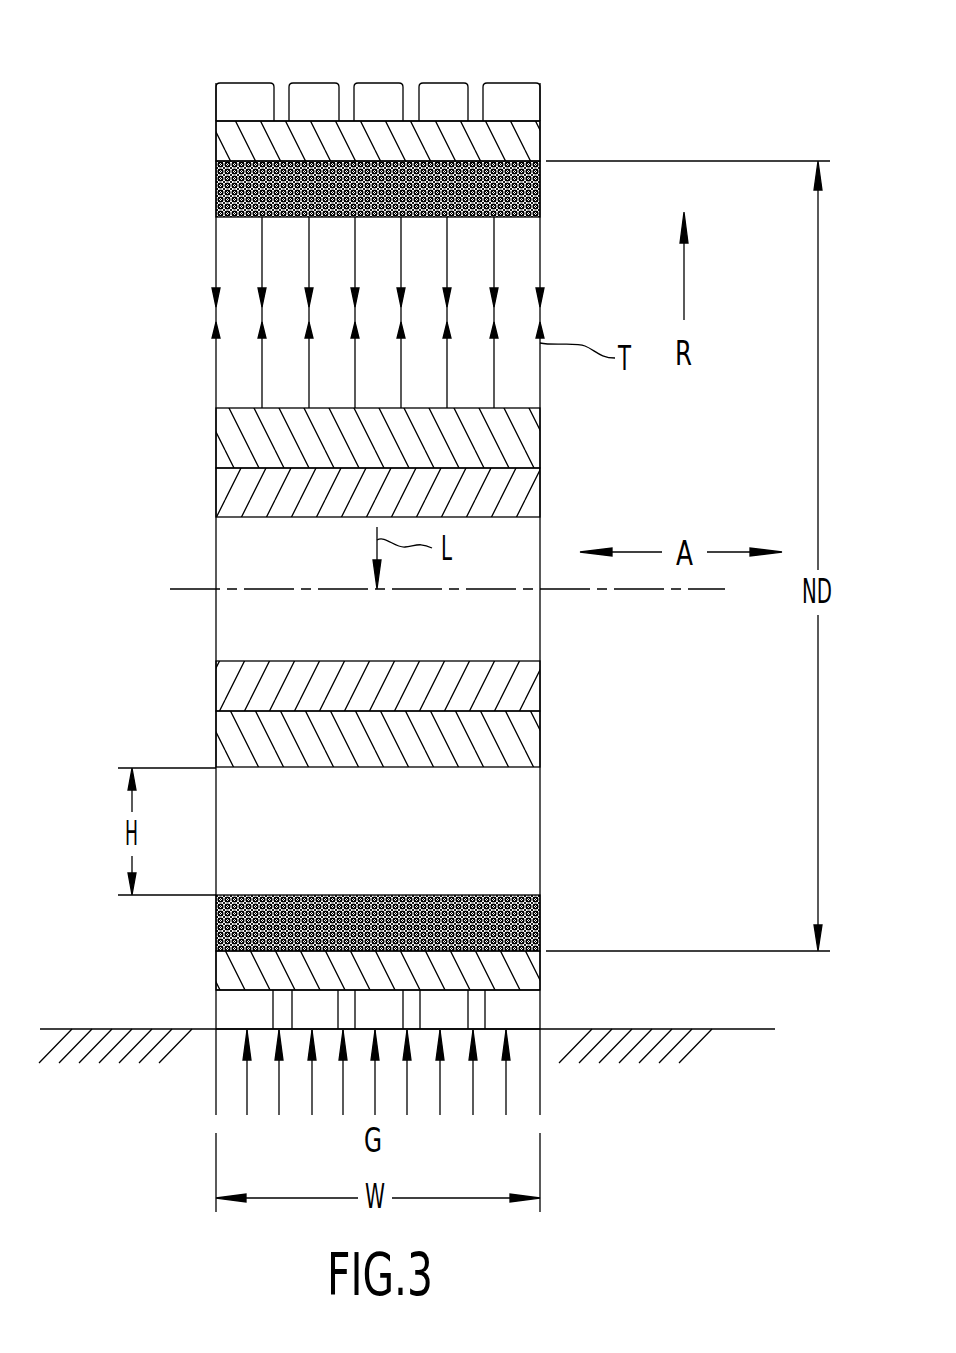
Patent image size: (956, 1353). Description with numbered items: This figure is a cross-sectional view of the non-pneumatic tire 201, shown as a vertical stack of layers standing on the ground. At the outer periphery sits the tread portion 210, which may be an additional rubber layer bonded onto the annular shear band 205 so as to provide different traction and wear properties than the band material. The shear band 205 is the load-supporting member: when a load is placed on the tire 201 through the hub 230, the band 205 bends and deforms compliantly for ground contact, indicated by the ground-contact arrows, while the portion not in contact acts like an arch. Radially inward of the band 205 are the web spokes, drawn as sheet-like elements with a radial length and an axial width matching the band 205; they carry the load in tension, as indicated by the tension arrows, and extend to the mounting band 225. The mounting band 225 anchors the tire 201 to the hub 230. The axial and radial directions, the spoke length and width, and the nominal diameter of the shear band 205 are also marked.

The non-pneumatic tire 201 is at (136, 97).
The annular shear band 205 is at (187, 162).
The tread portion 210 is at (540, 135).
The mounting band 225 is at (533, 438).
The hub 230 is at (533, 495).